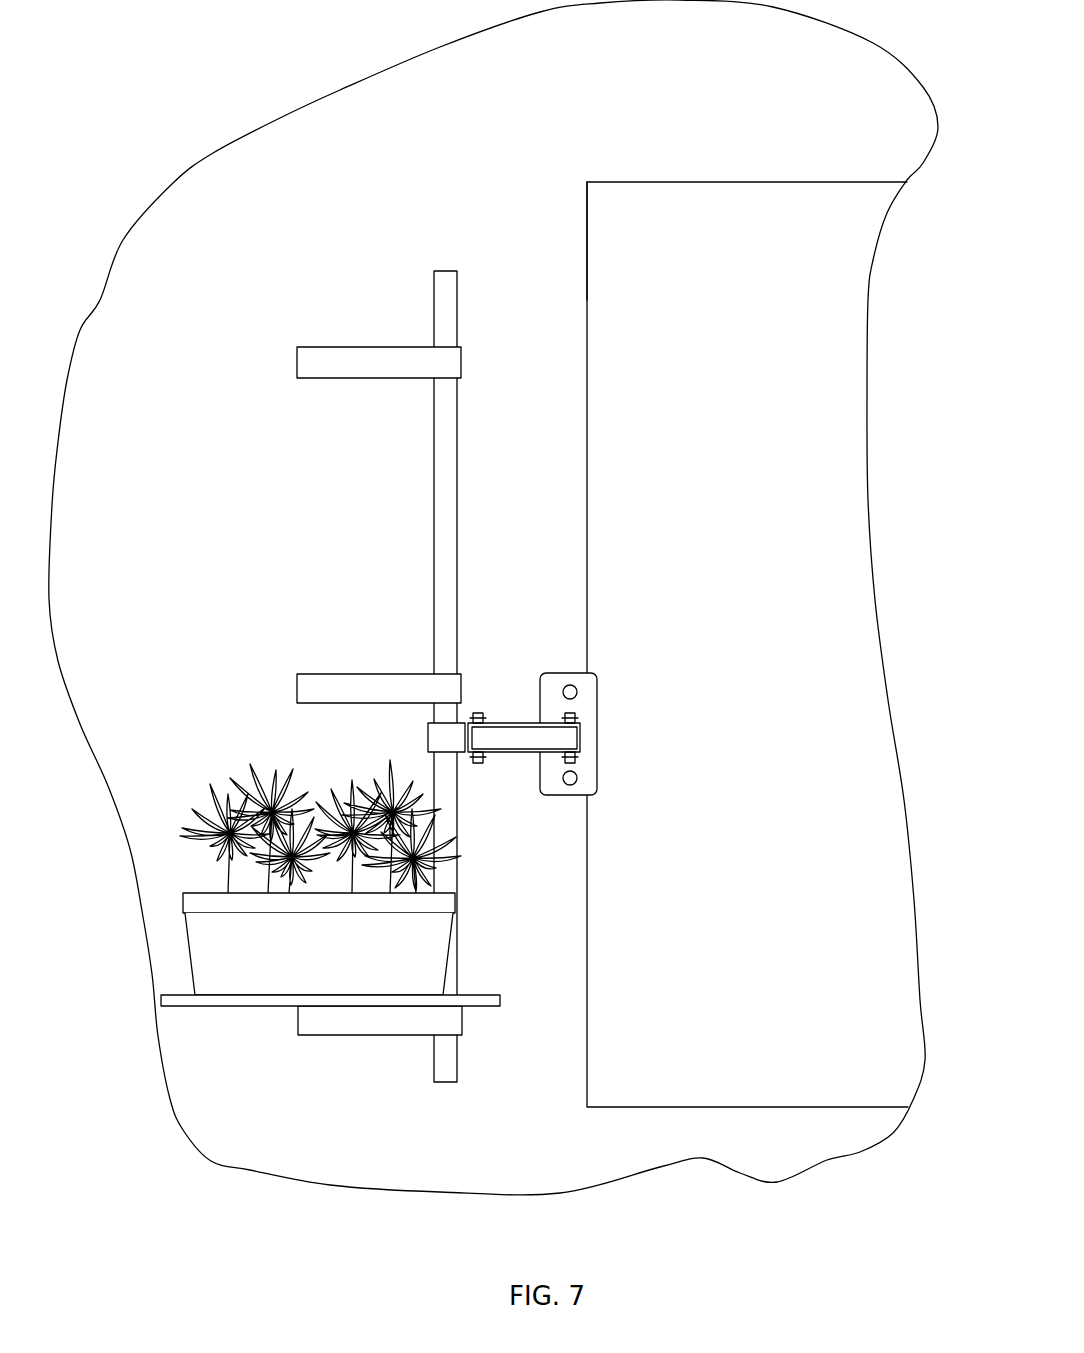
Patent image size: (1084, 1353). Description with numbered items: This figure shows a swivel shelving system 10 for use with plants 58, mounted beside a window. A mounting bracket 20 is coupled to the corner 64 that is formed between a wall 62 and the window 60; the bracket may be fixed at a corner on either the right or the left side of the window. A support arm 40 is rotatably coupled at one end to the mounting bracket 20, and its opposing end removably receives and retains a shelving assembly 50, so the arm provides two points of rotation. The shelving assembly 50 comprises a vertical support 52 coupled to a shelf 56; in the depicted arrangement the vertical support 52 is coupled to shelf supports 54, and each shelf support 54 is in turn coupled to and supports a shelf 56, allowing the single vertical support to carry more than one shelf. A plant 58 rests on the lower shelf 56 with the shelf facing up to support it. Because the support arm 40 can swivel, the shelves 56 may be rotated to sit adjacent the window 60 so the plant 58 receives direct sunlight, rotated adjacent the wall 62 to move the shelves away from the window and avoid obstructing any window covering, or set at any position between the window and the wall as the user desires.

The swivel shelving system 10 is at (422, 194).
The mounting bracket 20 is at (614, 738).
The support arm 40 is at (517, 733).
The shelving assembly 50 is at (488, 652).
The vertical support 52 is at (445, 283).
The shelf support 54 is at (475, 512).
The shelf 56 is at (297, 995).
The plant 58 is at (412, 950).
The window 60 is at (787, 328).
The wall 62 is at (325, 135).
The corner 64 is at (588, 285).